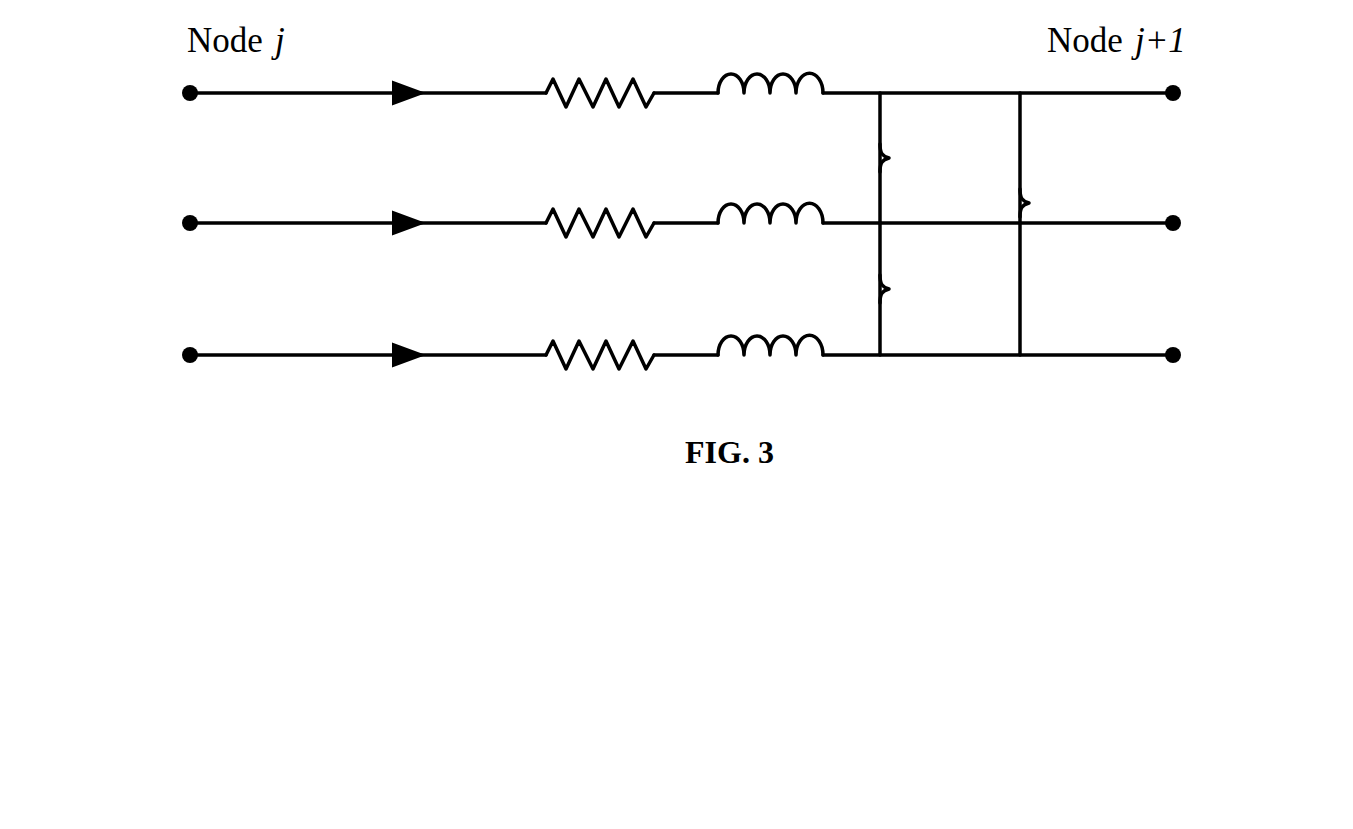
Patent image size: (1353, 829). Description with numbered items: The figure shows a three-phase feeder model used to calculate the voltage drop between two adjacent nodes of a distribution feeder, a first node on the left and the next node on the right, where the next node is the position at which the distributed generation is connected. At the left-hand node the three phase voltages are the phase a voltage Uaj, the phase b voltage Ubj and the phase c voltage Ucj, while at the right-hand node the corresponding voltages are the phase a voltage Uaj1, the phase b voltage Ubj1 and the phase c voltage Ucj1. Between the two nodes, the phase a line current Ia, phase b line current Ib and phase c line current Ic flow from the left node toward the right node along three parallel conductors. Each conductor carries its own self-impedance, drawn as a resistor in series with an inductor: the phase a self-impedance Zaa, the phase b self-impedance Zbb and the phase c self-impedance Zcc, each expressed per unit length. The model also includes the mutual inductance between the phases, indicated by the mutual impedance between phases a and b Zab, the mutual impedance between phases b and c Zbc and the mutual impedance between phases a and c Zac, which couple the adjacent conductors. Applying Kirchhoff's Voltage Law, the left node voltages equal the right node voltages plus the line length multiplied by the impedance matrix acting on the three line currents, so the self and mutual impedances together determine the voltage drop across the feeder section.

The phase a voltage at node j Uaj is at (150, 83).
The phase b voltage at node j Ubj is at (150, 207).
The phase c voltage at node j Ucj is at (150, 341).
The phase a voltage at node j+1 Uaj1 is at (1230, 81).
The phase b voltage at node j+1 Ubj1 is at (1230, 211).
The phase c voltage at node j+1 Ucj1 is at (1229, 333).
The phase a line current Ia is at (368, 62).
The phase b line current Ib is at (368, 194).
The phase c line current Ic is at (368, 327).
The phase a self-impedance Zaa is at (684, 64).
The phase b self-impedance Zbb is at (684, 196).
The phase c self-impedance Zcc is at (684, 328).
The mutual impedance between phases a and b Zab is at (917, 158).
The mutual impedance between phases b and c Zbc is at (921, 289).
The mutual impedance between phases a and c Zac is at (1061, 224).